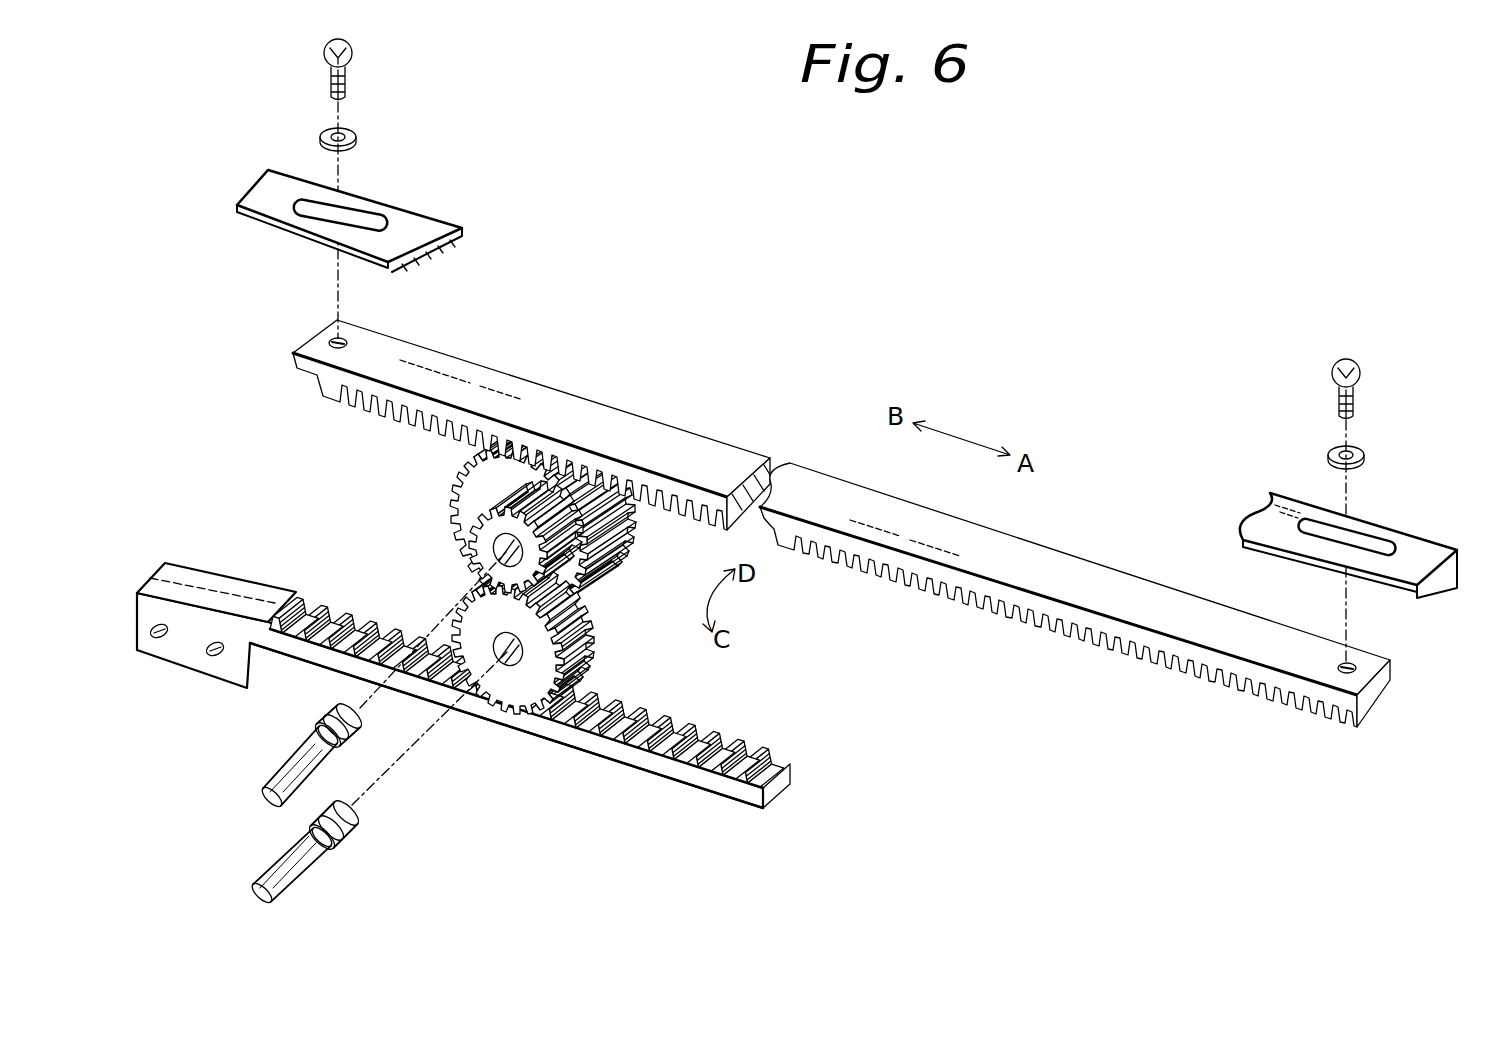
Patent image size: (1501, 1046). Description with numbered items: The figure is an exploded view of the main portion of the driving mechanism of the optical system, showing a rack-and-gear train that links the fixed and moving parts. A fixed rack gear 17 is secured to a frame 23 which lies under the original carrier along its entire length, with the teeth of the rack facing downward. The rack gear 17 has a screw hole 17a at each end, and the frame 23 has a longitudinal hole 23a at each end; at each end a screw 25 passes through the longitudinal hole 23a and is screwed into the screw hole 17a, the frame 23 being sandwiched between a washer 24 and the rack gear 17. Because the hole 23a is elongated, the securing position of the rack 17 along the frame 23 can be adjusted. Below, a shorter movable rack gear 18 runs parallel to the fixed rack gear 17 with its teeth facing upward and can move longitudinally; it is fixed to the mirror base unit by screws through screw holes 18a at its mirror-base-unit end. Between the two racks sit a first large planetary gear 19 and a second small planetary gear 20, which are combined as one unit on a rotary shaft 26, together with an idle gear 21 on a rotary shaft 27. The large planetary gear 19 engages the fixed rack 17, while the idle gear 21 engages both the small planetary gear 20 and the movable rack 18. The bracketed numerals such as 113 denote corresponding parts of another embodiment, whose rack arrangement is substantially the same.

The screw 25 is at (346, 76).
The washer 24 is at (355, 133).
The frame 23 is at (418, 222).
The longitudinal hole 23a is at (305, 203).
The fixed rack gear 17 is at (545, 400).
The screw hole 17a is at (333, 345).
The rack member 113 is at (737, 404).
The first large planetary gear 19 is at (450, 474).
The second small planetary gear 20 is at (476, 522).
The idle gear 21 is at (504, 634).
The movable rack gear 18 is at (572, 740).
The screw holes 18a is at (215, 648).
The rotary shaft 26 is at (272, 775).
The rotary shaft 27 is at (328, 858).